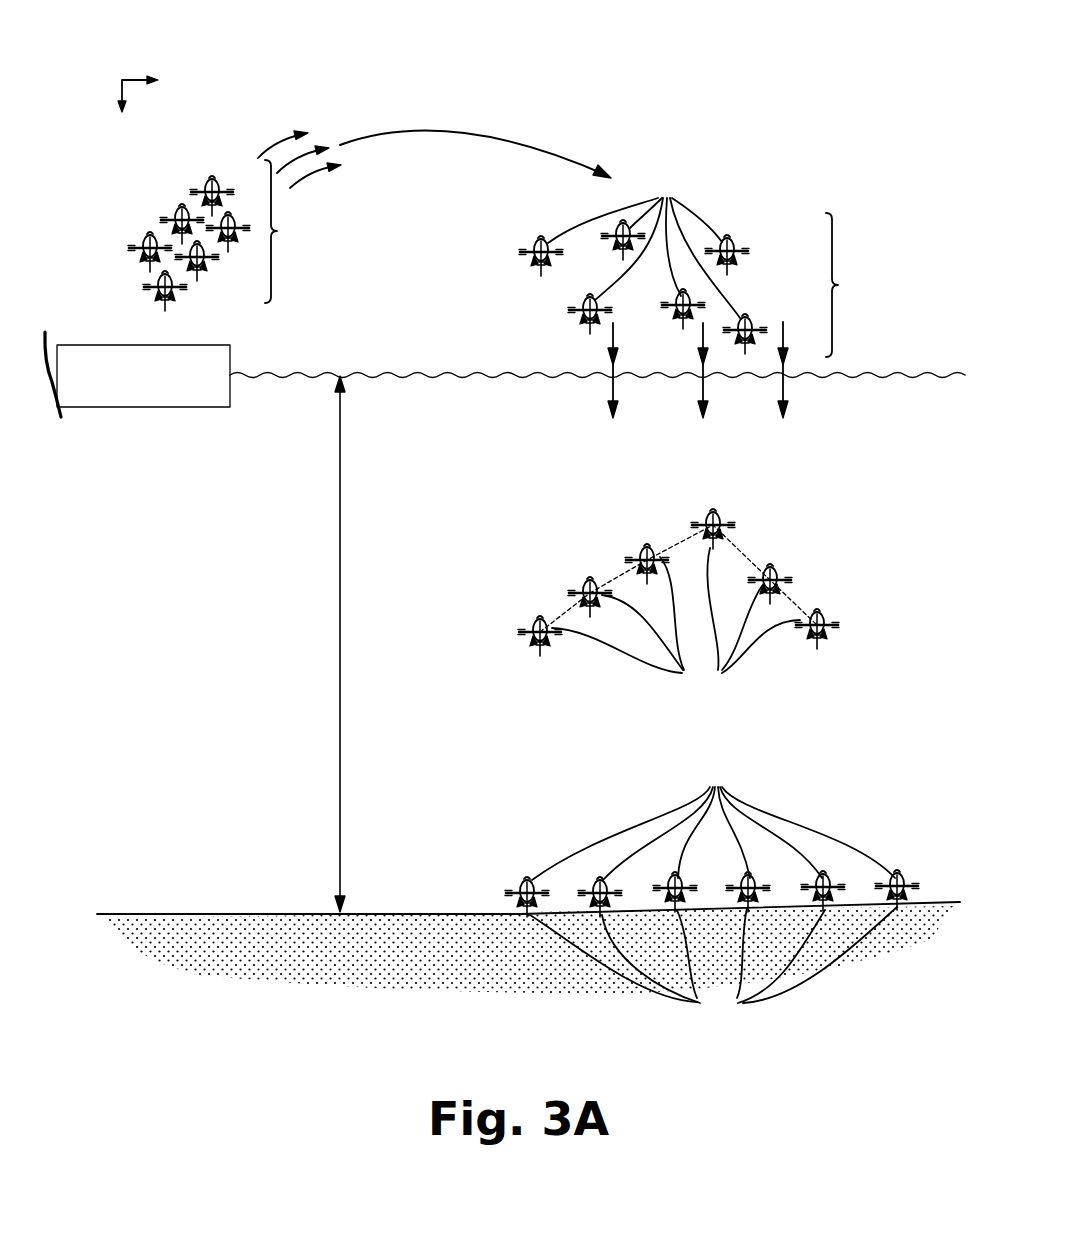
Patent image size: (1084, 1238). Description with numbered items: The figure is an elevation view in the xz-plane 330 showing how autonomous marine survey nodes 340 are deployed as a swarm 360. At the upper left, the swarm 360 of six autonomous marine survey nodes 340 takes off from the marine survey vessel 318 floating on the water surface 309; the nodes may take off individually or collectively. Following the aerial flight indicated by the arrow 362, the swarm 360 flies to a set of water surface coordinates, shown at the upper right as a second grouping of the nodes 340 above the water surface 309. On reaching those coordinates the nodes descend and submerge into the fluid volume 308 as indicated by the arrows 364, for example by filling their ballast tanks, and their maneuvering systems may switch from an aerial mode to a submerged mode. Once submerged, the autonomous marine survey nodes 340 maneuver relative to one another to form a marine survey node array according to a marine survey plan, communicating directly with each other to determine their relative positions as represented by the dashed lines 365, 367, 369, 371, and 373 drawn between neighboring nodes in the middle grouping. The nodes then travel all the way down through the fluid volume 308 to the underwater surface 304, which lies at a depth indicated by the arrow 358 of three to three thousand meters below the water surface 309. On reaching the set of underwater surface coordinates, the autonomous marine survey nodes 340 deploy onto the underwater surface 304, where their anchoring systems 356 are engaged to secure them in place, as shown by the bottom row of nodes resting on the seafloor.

The underwater surface 304 is at (232, 913).
The fluid volume 308 is at (196, 591).
The water surface 309 is at (313, 375).
The marine survey vessel 318 is at (72, 345).
The xz-plane 330 is at (122, 80).
The autonomous marine survey node 340 is at (712, 546).
The anchoring system 356 is at (713, 961).
The arrow indicating depth 358 is at (340, 615).
The swarm 360 is at (503, 258).
The arrow indicating aerial flight 362 is at (445, 133).
The arrows indicating descent 364 is at (785, 360).
The dashed line 365 is at (562, 608).
The dashed line 367 is at (617, 567).
The dashed line 369 is at (680, 535).
The dashed line 371 is at (740, 542).
The dashed line 373 is at (800, 598).